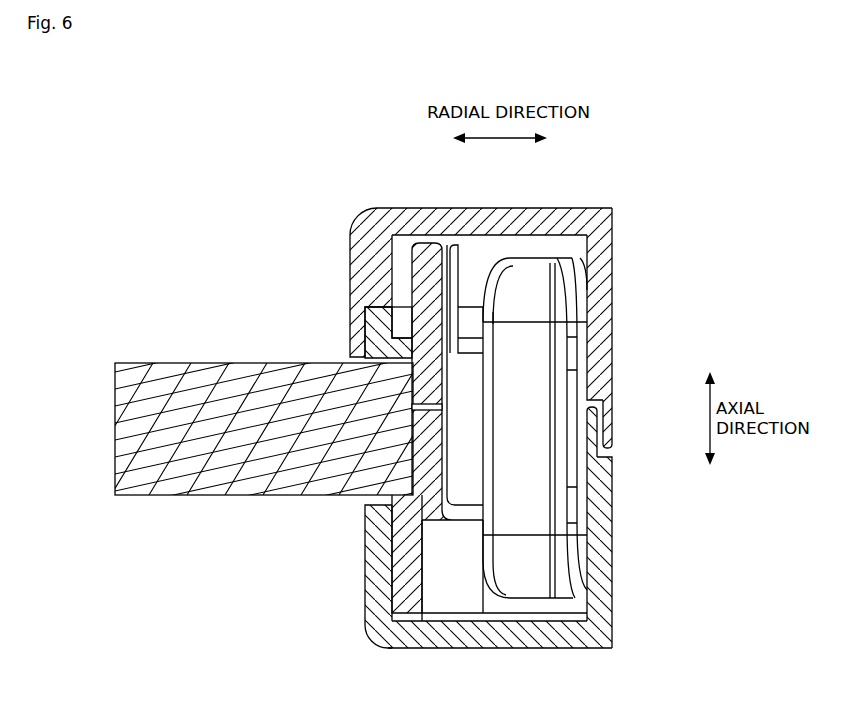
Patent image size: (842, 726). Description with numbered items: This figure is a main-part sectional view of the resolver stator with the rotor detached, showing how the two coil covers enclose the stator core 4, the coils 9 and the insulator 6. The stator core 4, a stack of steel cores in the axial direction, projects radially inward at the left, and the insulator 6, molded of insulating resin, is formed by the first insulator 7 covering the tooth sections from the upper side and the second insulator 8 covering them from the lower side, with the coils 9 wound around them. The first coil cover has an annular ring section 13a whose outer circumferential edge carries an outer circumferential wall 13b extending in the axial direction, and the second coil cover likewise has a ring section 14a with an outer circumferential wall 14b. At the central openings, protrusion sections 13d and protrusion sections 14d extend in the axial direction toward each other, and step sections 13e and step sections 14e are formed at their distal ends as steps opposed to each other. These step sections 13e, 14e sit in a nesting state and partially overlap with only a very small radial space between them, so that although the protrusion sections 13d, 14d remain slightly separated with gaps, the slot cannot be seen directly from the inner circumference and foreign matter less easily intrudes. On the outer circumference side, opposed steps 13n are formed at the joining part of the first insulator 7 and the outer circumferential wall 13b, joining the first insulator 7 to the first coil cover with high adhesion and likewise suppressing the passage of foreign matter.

The stator core 4 is at (219, 373).
The insulator 6 is at (369, 391).
The first insulator 7 is at (432, 250).
The second insulator 8 is at (407, 590).
The coils 9 is at (518, 577).
The ring section 13a is at (557, 223).
The outer circumferential wall 13b is at (365, 268).
The protrusion sections 13d is at (602, 285).
The step sections 13e is at (607, 442).
The steps 13n is at (385, 308).
The ring section 14a is at (544, 640).
The outer circumferential wall 14b is at (378, 560).
The protrusion sections 14d is at (600, 546).
The step sections 14e is at (592, 418).